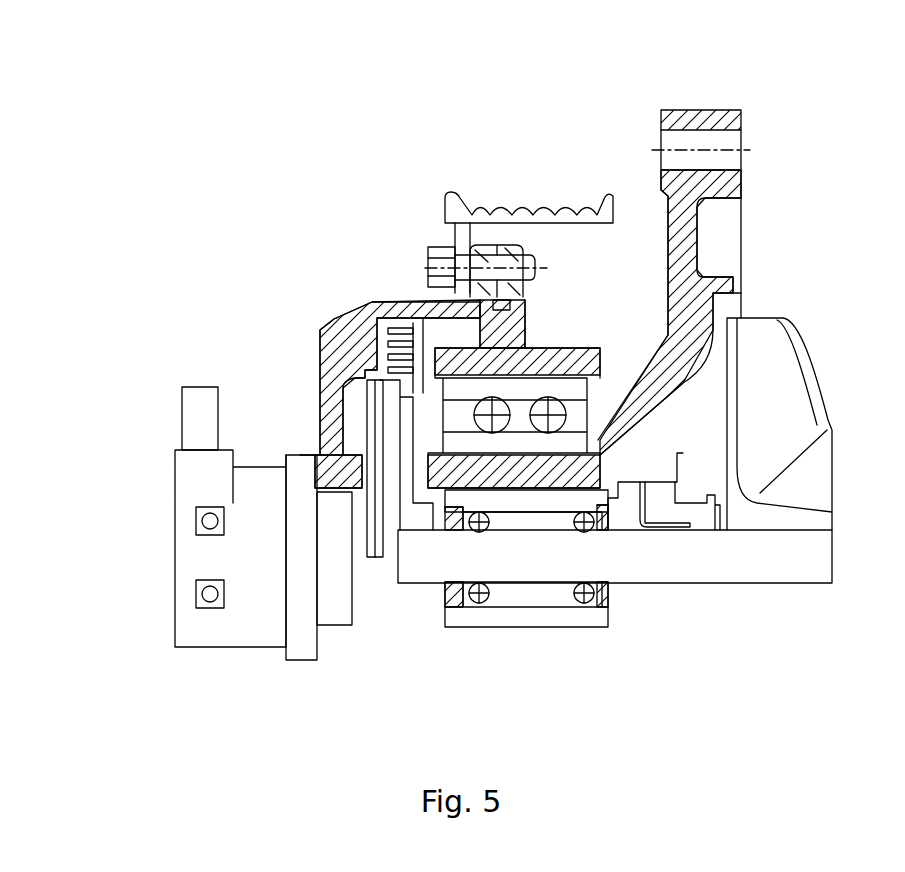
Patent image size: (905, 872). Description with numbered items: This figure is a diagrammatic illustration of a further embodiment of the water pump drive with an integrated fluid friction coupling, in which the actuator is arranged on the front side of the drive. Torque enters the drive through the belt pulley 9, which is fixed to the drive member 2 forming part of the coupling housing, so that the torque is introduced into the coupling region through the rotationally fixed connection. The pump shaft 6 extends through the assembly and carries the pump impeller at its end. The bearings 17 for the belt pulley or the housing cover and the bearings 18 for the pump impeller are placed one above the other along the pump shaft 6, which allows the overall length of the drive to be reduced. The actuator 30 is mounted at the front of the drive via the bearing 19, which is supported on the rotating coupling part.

The belt pulley 9 is at (490, 215).
The drive member 2 is at (355, 370).
The bearings 17 is at (527, 397).
The bearing 19 is at (203, 510).
The actuator 30 is at (185, 547).
The bearings 18 is at (480, 617).
The pump shaft 6 is at (762, 550).